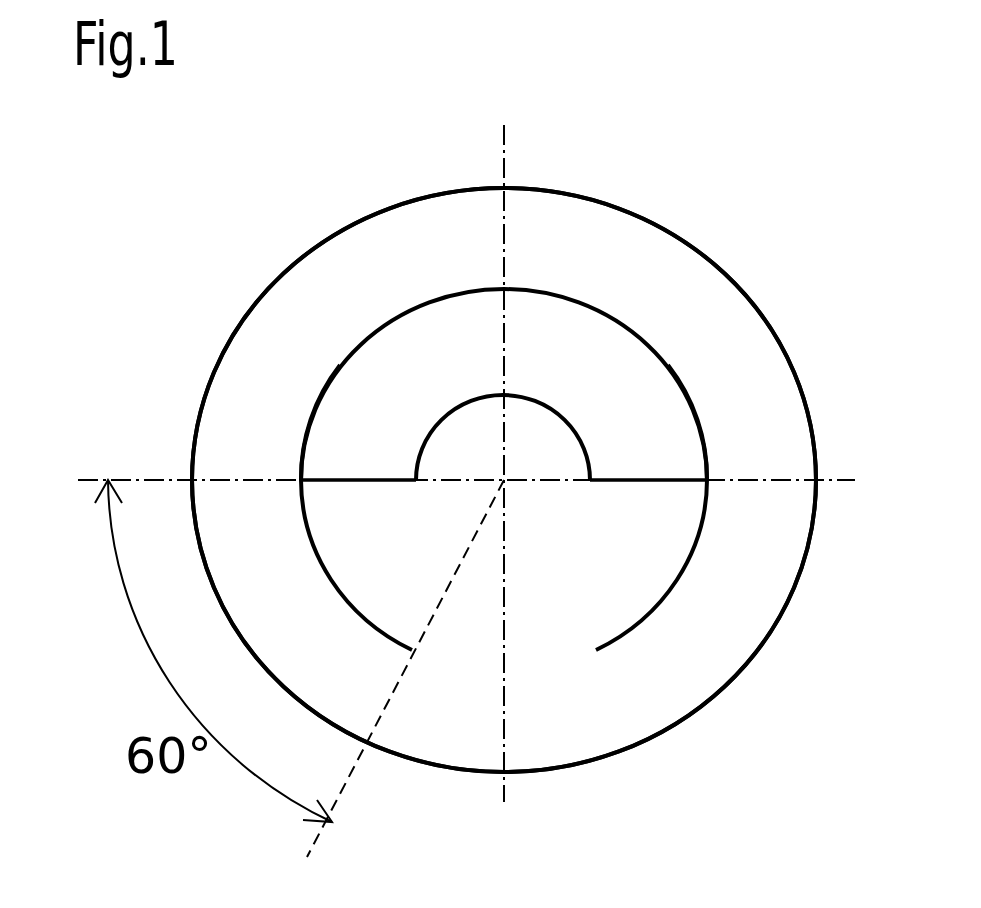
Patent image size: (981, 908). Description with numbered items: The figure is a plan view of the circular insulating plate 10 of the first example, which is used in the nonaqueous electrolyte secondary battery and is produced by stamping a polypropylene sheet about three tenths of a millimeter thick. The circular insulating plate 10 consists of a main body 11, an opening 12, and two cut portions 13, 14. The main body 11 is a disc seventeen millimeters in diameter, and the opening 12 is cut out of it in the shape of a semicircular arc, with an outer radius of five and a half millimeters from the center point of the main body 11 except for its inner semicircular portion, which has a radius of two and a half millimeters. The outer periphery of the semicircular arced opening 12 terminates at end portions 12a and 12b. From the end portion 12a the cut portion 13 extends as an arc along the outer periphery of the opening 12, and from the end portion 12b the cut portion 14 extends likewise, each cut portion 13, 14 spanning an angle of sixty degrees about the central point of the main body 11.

The circular insulating plate 10 is at (380, 197).
The main body 11 is at (663, 273).
The opening 12 is at (535, 328).
The end portion 12a is at (300, 480).
The end portion 12b is at (710, 477).
The cut portion 13 is at (305, 528).
The cut portion 14 is at (668, 590).